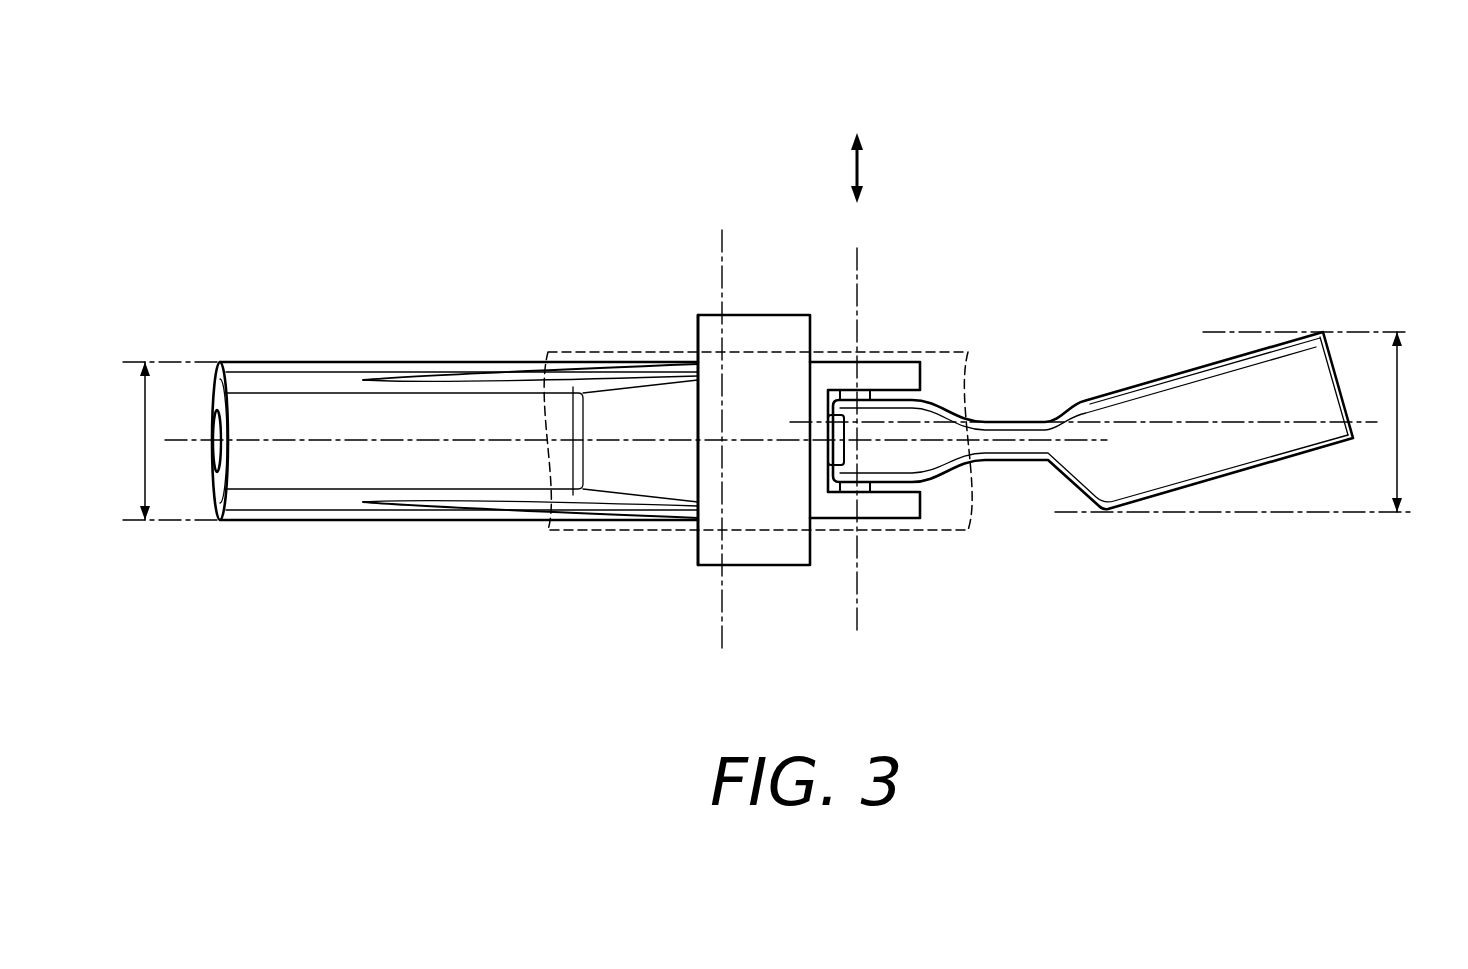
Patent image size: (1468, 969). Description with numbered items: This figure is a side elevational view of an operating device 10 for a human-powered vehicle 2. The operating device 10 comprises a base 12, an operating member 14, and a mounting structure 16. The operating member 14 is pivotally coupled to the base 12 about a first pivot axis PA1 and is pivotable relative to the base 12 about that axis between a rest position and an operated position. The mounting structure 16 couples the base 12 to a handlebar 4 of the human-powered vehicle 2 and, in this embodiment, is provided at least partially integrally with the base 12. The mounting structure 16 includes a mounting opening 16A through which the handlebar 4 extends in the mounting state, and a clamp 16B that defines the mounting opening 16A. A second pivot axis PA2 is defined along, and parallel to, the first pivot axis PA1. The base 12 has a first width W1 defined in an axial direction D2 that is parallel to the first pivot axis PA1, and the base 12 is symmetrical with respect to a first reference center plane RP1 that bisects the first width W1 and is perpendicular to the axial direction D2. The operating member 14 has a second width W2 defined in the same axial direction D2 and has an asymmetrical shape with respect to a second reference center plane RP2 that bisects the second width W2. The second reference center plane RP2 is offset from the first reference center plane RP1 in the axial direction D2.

The human-powered vehicle 2 is at (1016, 133).
The operating device 10 is at (567, 222).
The base 12 is at (318, 360).
The operating member 14 is at (1090, 390).
The mounting structure 16 is at (767, 572).
The mounting opening 16A is at (787, 530).
The clamp 16B is at (712, 553).
The handlebar 4 is at (933, 532).
The first reference center plane RP1 is at (424, 440).
The second reference center plane RP2 is at (1148, 420).
The first pivot axis PA1 is at (858, 282).
The second pivot axis PA2 is at (721, 258).
The first width W1 is at (145, 438).
The second width W2 is at (1398, 422).
The axial direction D2 is at (860, 167).